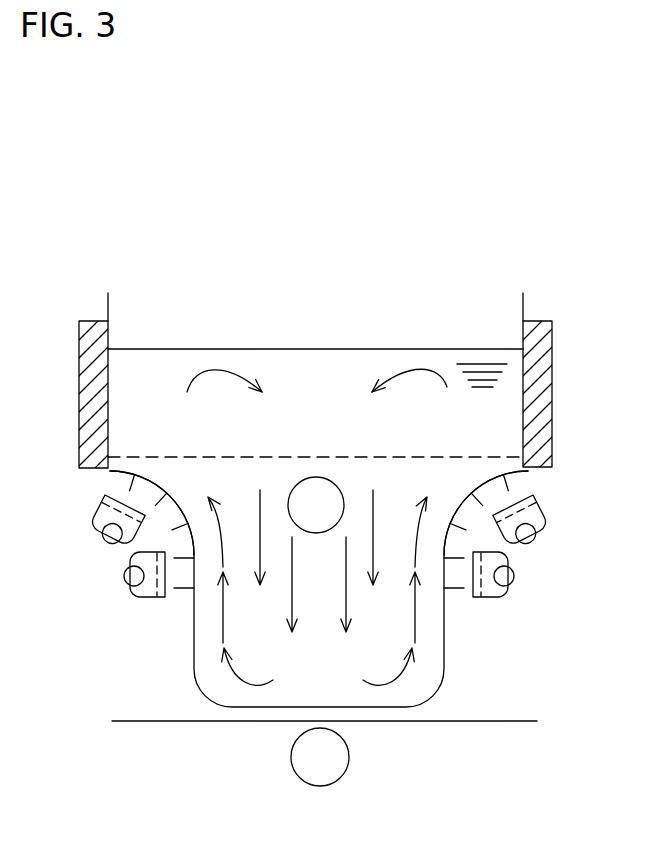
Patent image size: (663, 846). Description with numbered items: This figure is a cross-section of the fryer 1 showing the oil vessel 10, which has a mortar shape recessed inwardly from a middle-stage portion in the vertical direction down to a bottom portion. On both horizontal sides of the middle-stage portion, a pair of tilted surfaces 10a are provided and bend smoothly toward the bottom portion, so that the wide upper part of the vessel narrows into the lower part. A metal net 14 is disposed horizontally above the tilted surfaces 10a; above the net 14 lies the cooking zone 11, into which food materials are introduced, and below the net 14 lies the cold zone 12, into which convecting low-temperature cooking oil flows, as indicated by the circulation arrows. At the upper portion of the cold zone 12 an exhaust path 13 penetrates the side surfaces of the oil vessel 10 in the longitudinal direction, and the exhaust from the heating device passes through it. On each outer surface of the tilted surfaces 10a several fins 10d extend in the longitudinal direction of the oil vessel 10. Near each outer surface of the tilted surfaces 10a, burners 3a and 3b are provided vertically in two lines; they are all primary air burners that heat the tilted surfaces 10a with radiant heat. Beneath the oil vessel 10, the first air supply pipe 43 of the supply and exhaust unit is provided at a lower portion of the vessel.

The apparatus 1 is at (335, 183).
The oil vessel 10 is at (527, 304).
The tilted surfaces 10a is at (155, 480).
The fins 10d is at (182, 592).
The cooking zone 11 is at (308, 375).
The cold zone 12 is at (313, 640).
The exhaust path 13 is at (290, 510).
The metal net 14 is at (195, 457).
The burner 3a is at (98, 507).
The burner 3b is at (135, 553).
The first air supply pipe 43 is at (295, 773).